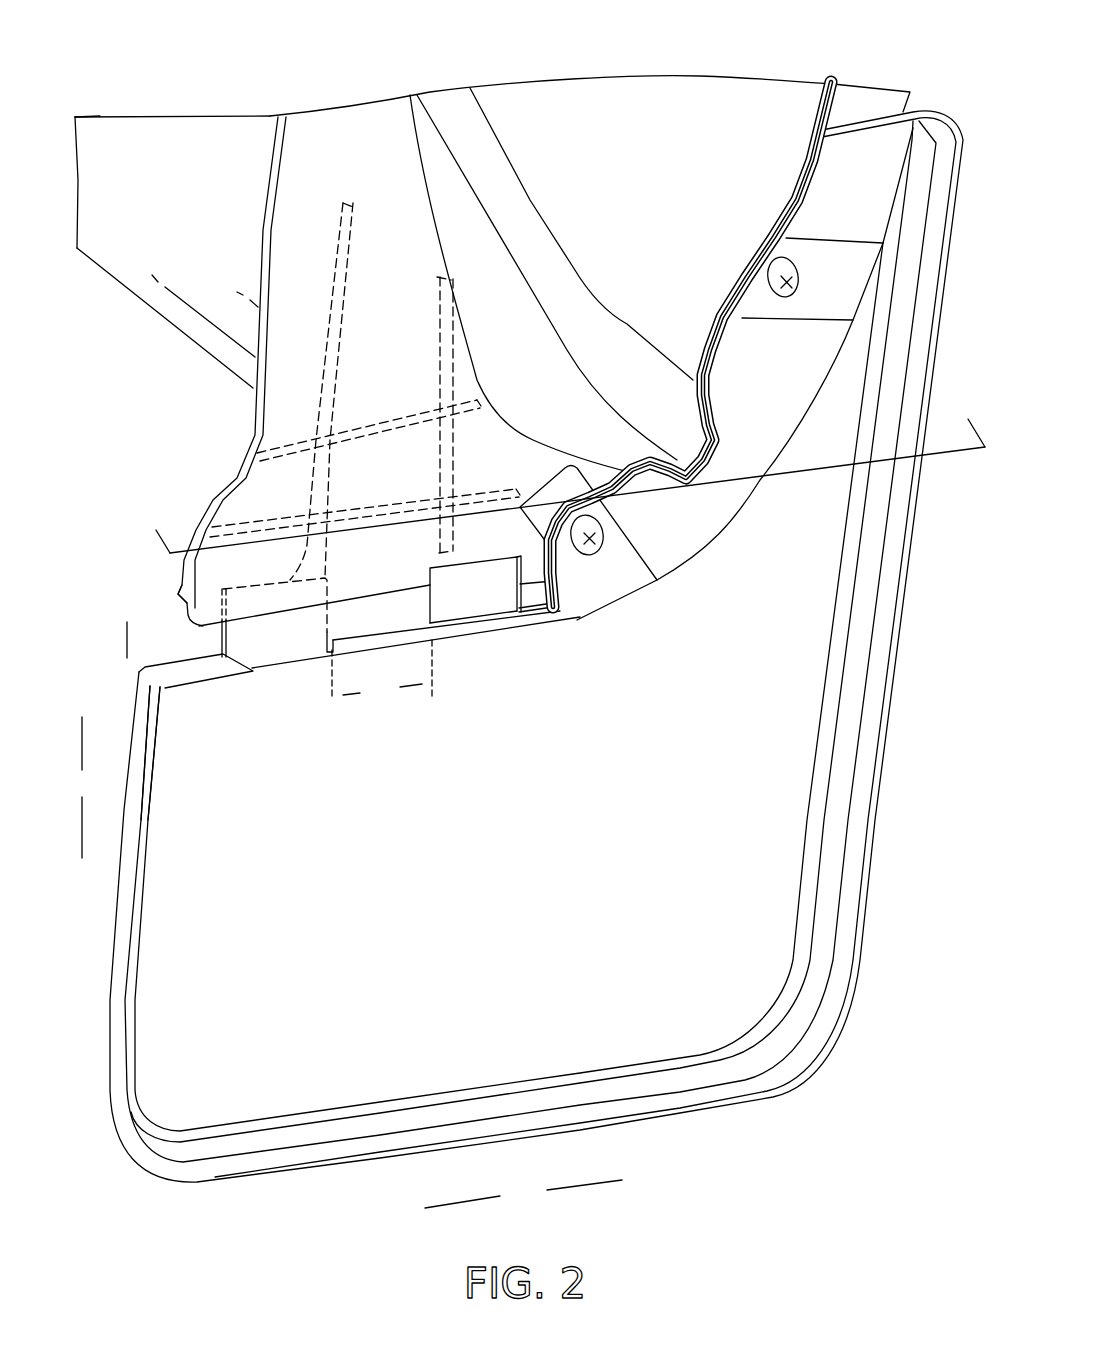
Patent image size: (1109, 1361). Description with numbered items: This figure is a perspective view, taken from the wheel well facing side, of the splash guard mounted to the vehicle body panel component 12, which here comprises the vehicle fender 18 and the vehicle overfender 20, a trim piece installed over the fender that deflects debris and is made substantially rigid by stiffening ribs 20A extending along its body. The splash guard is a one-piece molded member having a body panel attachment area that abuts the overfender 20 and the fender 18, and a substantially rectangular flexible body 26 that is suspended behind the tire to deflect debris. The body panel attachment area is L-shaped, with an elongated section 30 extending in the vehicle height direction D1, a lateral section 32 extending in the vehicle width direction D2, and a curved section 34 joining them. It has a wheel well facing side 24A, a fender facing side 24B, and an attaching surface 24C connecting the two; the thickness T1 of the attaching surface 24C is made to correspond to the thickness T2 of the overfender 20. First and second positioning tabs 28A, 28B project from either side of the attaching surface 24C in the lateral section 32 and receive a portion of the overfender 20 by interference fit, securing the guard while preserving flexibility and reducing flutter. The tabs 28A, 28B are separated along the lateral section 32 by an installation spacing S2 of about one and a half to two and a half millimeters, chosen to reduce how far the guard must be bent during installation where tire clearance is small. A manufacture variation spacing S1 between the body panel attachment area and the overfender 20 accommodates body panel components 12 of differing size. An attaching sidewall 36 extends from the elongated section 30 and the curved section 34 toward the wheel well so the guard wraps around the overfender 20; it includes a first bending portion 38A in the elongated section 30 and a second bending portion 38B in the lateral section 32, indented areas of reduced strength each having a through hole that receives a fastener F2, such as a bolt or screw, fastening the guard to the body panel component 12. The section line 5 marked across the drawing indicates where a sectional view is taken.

The vehicle body panel component 12 is at (274, 72).
The vehicle fender 18 is at (155, 116).
The vehicle overfender 20 is at (350, 137).
The stiffening ribs 20A is at (353, 267).
The elongated section 30 is at (716, 226).
The second bending portion 38B is at (827, 270).
The fastener F2 is at (787, 297).
The section line 5- 5 is at (562, 464).
The second positioning tab 28B is at (326, 550).
The first positioning tab 28A is at (478, 597).
The thickness of the attaching surface T1 is at (378, 635).
The thickness of the vehicle body panel component T2 is at (180, 600).
The manufacture variation spacing S1 is at (108, 640).
The fender facing side 24B is at (187, 658).
The attaching surface 24C is at (218, 665).
The wheel well facing side 24A is at (183, 684).
The vehicle height direction D1 is at (84, 787).
The installation spacing S2 is at (382, 671).
The lateral section 32 is at (413, 738).
The attaching sidewall 36 is at (683, 519).
The curved section 34 is at (690, 588).
The first bending portion 38A is at (578, 596).
The flexible body 26 is at (521, 920).
The vehicle width direction D2 is at (523, 1194).